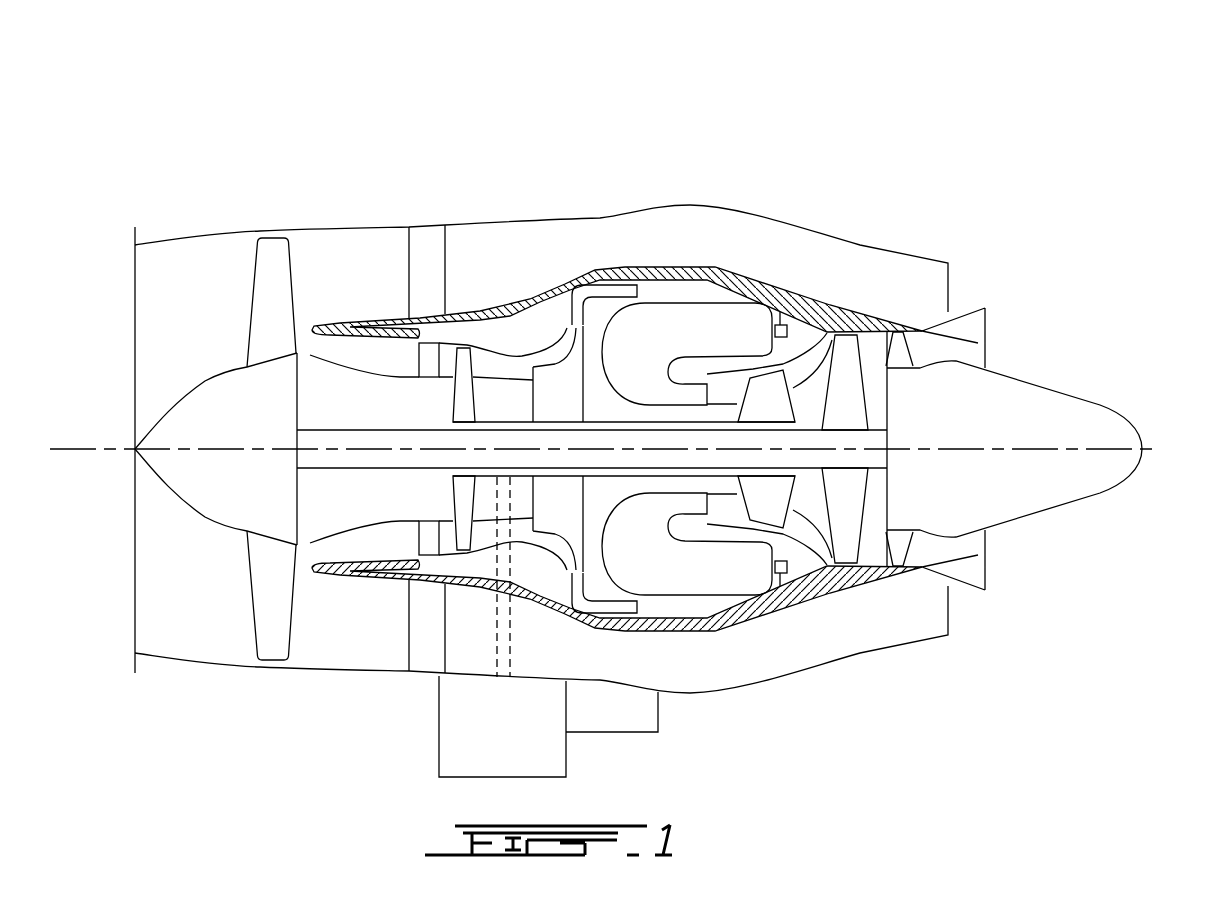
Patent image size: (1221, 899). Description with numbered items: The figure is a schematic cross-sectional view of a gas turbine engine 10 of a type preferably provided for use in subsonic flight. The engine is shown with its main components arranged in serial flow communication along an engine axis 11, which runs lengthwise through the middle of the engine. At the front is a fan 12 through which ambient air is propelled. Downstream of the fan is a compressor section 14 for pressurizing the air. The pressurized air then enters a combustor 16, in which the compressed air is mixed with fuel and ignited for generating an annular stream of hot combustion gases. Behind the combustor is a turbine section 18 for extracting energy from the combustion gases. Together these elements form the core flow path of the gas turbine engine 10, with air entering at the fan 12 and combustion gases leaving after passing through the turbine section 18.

The gas turbine engine 10 is at (811, 143).
The engine axis 11 is at (72, 449).
The fan 12 is at (267, 587).
The compressor section 14 is at (497, 363).
The combustor 16 is at (690, 322).
The turbine section 18 is at (808, 508).